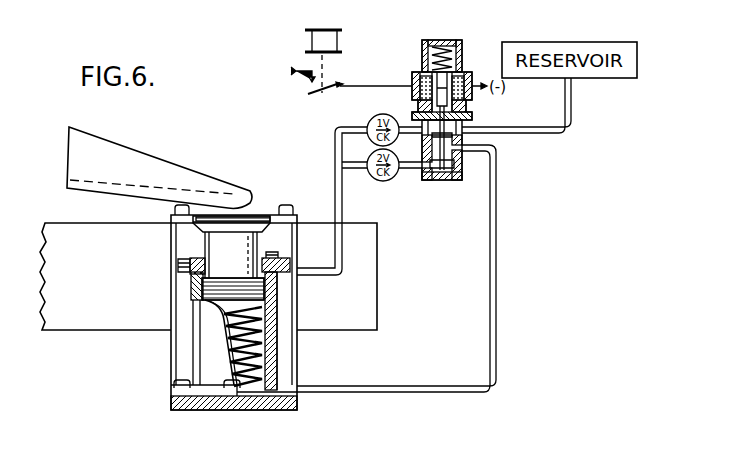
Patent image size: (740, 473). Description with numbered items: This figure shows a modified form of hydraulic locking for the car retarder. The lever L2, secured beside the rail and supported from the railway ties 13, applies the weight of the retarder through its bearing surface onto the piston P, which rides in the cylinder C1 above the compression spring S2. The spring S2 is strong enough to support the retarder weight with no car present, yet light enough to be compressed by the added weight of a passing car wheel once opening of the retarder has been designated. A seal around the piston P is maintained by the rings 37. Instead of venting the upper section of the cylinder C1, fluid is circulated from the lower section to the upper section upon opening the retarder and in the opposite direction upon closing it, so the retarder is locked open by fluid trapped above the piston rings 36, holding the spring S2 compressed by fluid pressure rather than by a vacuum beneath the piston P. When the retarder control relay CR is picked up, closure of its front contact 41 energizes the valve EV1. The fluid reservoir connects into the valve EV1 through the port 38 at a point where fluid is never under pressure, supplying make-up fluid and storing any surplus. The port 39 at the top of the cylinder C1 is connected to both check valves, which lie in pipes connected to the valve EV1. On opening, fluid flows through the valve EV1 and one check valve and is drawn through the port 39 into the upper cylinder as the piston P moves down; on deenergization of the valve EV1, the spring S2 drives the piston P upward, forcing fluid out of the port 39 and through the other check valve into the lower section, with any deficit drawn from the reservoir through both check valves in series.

The railway ties 13 is at (365, 307).
The lever L2 is at (173, 178).
The cylinder C1 is at (275, 338).
The compression spring S2 is at (278, 353).
The piston P is at (240, 248).
The piston rings 36 is at (196, 290).
The rings 37 is at (203, 262).
The port 39 is at (282, 282).
The port 38 is at (462, 132).
The valve EV1 is at (445, 42).
The retarder control relay CR is at (323, 52).
The front contact 41 is at (322, 95).